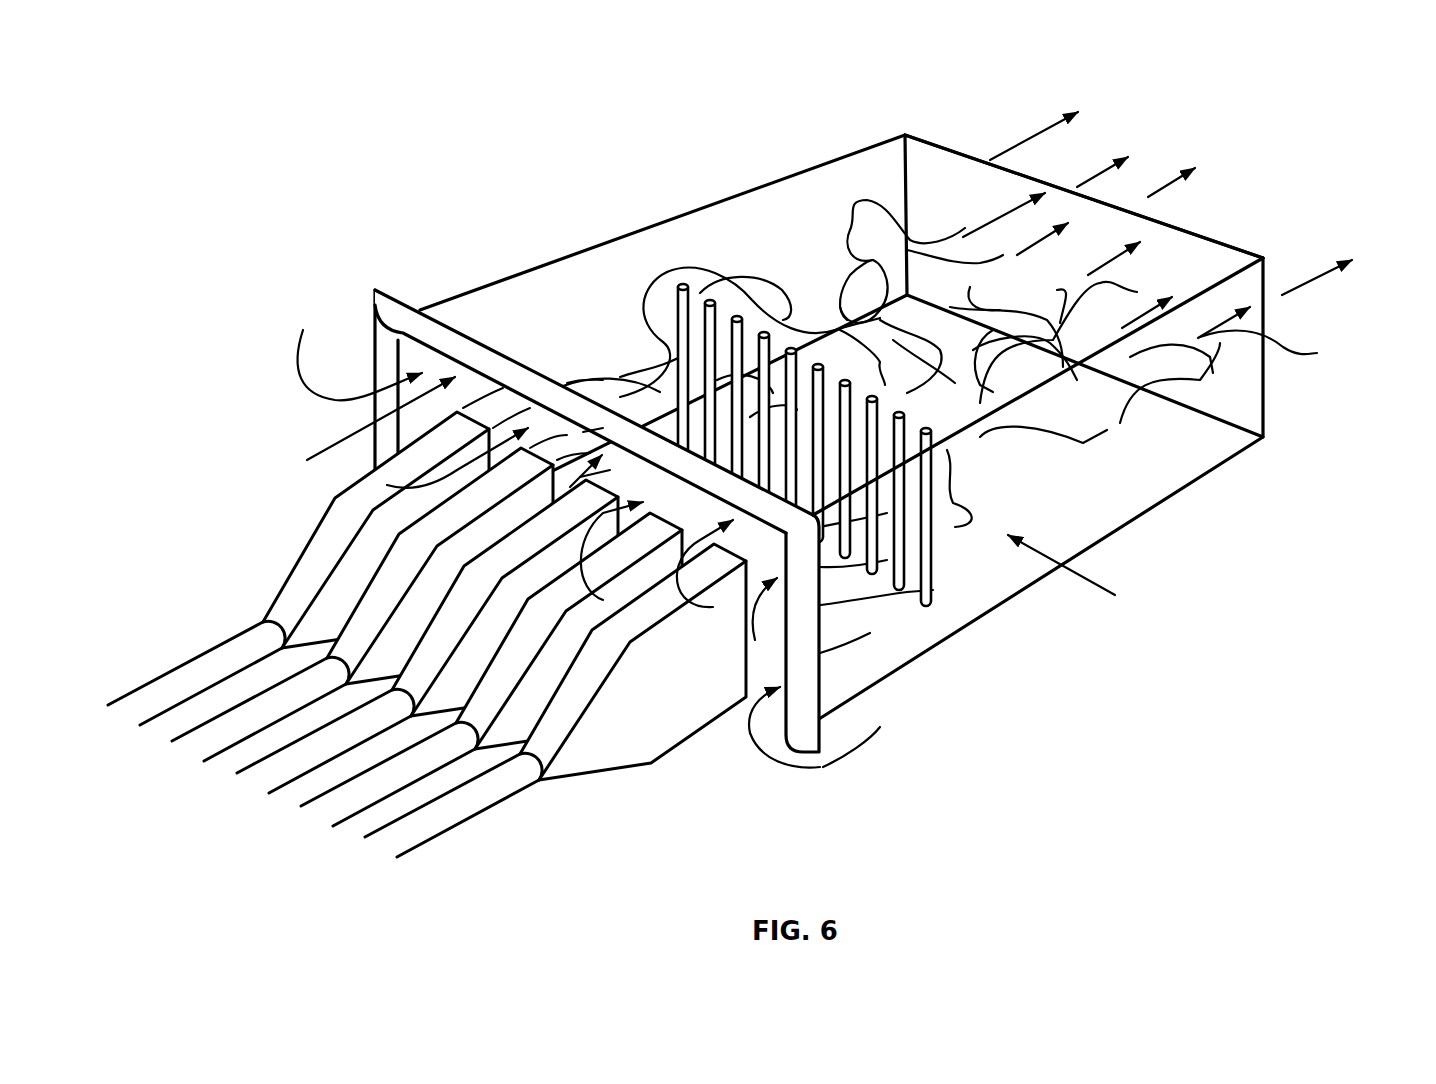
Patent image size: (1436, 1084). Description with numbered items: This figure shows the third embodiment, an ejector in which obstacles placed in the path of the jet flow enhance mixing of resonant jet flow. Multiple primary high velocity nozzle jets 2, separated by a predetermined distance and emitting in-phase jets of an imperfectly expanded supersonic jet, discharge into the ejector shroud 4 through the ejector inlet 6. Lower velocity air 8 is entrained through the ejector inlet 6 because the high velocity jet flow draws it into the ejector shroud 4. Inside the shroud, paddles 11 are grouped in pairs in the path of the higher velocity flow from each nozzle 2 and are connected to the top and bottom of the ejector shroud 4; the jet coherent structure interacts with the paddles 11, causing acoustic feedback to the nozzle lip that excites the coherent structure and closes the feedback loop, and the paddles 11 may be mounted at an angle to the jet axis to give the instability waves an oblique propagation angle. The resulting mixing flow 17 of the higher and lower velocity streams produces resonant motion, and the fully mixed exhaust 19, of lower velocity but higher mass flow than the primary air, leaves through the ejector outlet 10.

The primary high velocity nozzle jets 2 is at (292, 580).
The ejector shroud 4 is at (523, 270).
The ejector inlet 6 is at (405, 348).
The lower velocity air 8 is at (304, 459).
The ejector outlet 10 is at (905, 132).
The paddles 11 is at (933, 590).
The gas flow 17 is at (774, 496).
The fully mixed exhaust 19 is at (1285, 297).